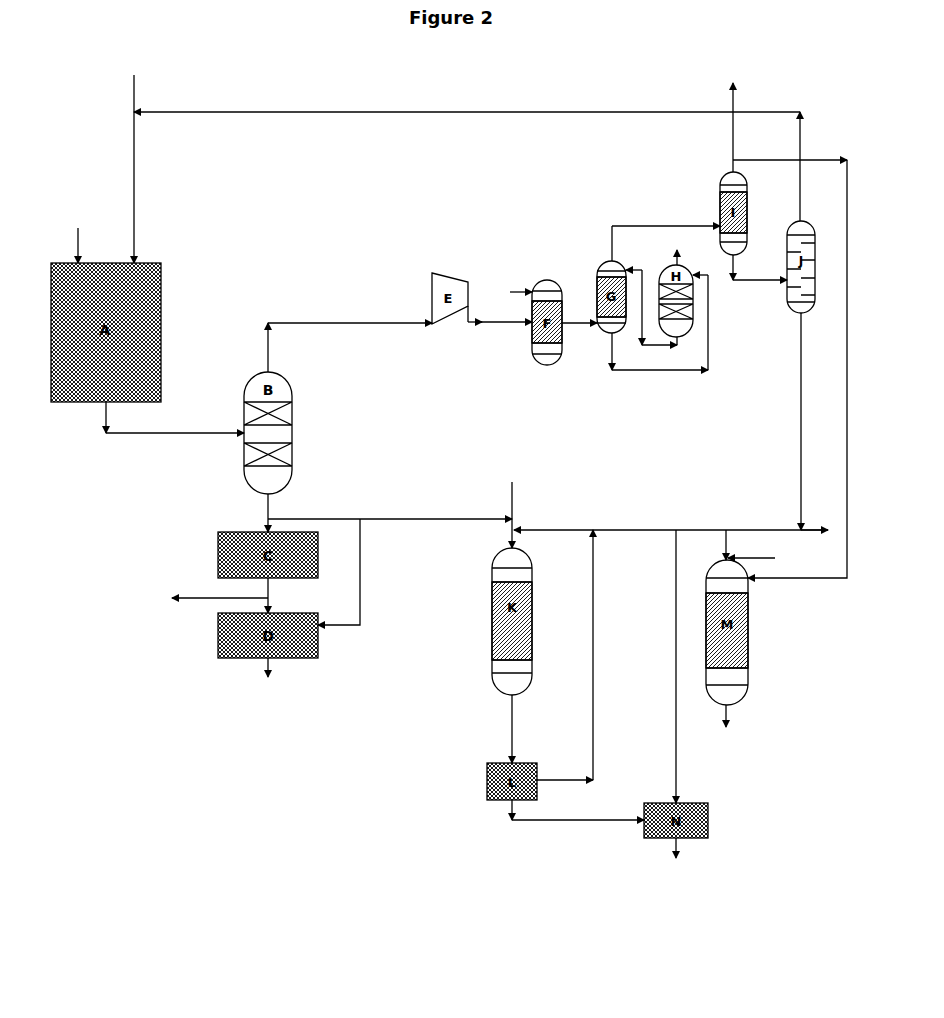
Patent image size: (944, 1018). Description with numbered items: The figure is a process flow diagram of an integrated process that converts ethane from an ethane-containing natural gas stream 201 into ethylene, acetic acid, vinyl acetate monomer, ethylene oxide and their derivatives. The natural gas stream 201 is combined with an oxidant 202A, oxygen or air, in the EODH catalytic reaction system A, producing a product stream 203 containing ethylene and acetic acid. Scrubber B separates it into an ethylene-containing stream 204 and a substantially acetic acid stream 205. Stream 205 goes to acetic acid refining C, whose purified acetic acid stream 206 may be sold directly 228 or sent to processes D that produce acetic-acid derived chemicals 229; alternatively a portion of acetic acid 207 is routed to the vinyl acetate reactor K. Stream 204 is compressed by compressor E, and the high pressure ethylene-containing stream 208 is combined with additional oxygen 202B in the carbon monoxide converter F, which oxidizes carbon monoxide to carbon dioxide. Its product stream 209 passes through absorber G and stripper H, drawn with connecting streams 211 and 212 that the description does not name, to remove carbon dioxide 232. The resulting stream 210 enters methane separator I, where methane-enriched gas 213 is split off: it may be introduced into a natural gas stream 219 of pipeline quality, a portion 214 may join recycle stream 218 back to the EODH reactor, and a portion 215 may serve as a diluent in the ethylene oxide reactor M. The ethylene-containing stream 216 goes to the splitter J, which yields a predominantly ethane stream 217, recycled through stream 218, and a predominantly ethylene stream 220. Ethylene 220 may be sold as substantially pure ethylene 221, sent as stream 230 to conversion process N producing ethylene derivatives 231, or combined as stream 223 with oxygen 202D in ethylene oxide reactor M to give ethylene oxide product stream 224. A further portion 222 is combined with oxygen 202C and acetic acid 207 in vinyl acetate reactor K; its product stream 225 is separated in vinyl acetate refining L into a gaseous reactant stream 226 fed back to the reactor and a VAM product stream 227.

The ethane-containing natural gas stream 201 is at (134, 159).
The oxidant 202A is at (96, 245).
The additional oxygen 202B is at (513, 283).
The oxygen 202C is at (511, 507).
The oxygen 202D is at (770, 559).
The product stream comprising ethylene and acetic acid 203 is at (175, 417).
The ethylene-containing stream 204 is at (350, 347).
The acetic acid stream 205 is at (282, 513).
The purified acetic acid stream 206 is at (282, 595).
The acetic acid stream to vinyl acetate reactor 207 is at (390, 563).
The high pressure ethylene-containing stream 208 is at (500, 312).
The product stream from CO converter 209 is at (579, 314).
The product stream to methane separator 210 is at (653, 243).
The bottoms stream from G 211 is at (648, 322).
The stream from G to H 212 is at (651, 299).
The methane-enriched natural gas stream 213 is at (775, 161).
The methane-enriched recycle portion 214 is at (746, 142).
The methane-enriched diluent stream 215 is at (797, 369).
The ethylene-containing stream 216 is at (760, 267).
The predominantly ethane stream 217 is at (814, 166).
The recycle stream to EODH reactor 218 is at (467, 102).
The natural gas stream 219 is at (733, 88).
The predominantly ethylene stream 220 is at (788, 421).
The substantially pure ethylene 221 is at (818, 520).
The ethylene to vinyl acetate reactor 222 is at (671, 521).
The ethylene to ethylene oxide reactor 223 is at (713, 545).
The ethylene oxide product stream 224 is at (727, 727).
The vinyl acetate reactor product stream 225 is at (496, 729).
The gaseous reactants stream 226 is at (580, 655).
The VAM product stream 227 is at (571, 820).
The acetic acid for direct sale 228 is at (202, 599).
The acetic-acid derived chemicals 229 is at (268, 680).
The ethylene to derivatives conversion 230 is at (661, 666).
The ethylene derivatives 231 is at (676, 858).
The carbon dioxide 232 is at (676, 249).